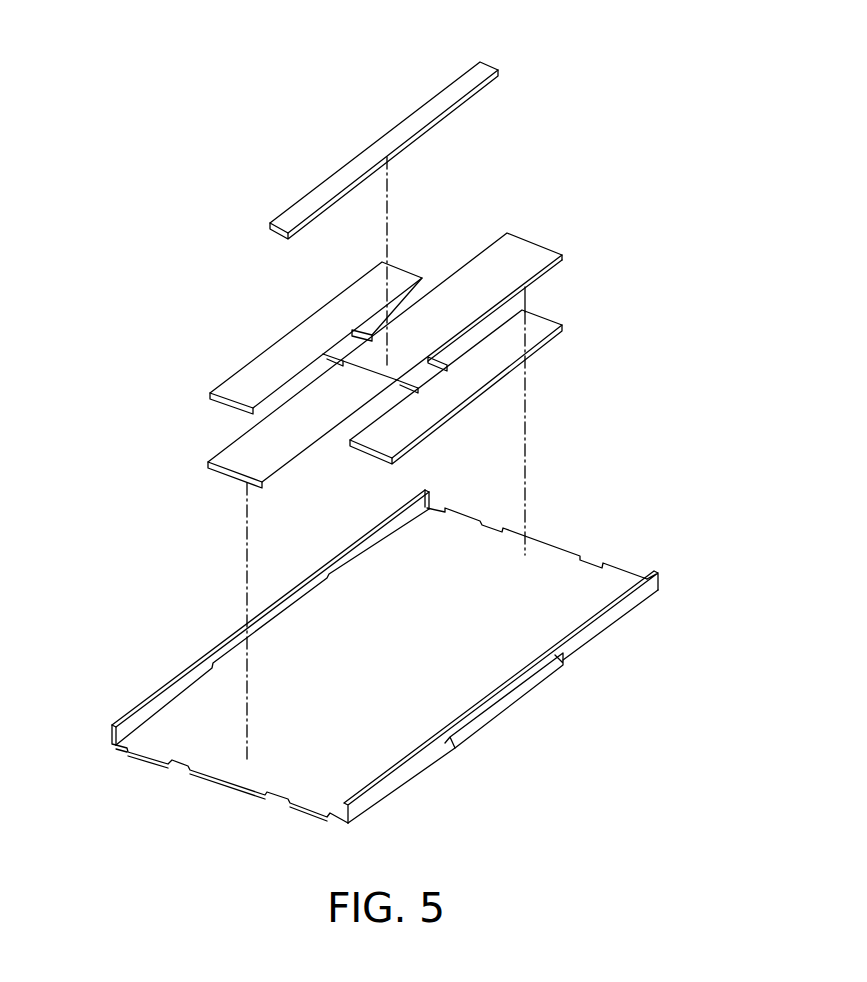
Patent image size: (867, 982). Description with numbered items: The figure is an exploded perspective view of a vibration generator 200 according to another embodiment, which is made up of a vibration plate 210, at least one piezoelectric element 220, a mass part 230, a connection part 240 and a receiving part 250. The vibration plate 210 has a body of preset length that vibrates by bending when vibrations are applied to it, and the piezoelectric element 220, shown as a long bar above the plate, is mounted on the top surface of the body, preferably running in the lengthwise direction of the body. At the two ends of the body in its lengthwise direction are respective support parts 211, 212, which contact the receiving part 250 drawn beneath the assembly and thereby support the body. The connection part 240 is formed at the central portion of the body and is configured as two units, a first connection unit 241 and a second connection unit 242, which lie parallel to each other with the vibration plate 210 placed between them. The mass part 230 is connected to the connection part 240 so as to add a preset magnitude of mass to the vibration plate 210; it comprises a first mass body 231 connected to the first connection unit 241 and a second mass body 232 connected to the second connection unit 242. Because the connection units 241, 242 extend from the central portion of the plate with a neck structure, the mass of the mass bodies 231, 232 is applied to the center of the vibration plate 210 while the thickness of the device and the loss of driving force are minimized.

The vibration generator 200 is at (168, 56).
The vibration plate 210 is at (522, 248).
The support part 211 is at (377, 440).
The support part 212 is at (558, 275).
The piezoelectric element 220 is at (468, 95).
The mass part 230 is at (96, 355).
The first mass body 231 is at (240, 386).
The second mass body 232 is at (240, 478).
The connection part 240 is at (688, 258).
The first connection unit 241 is at (353, 343).
The second connection unit 242 is at (420, 373).
The receiving part 250 is at (580, 643).